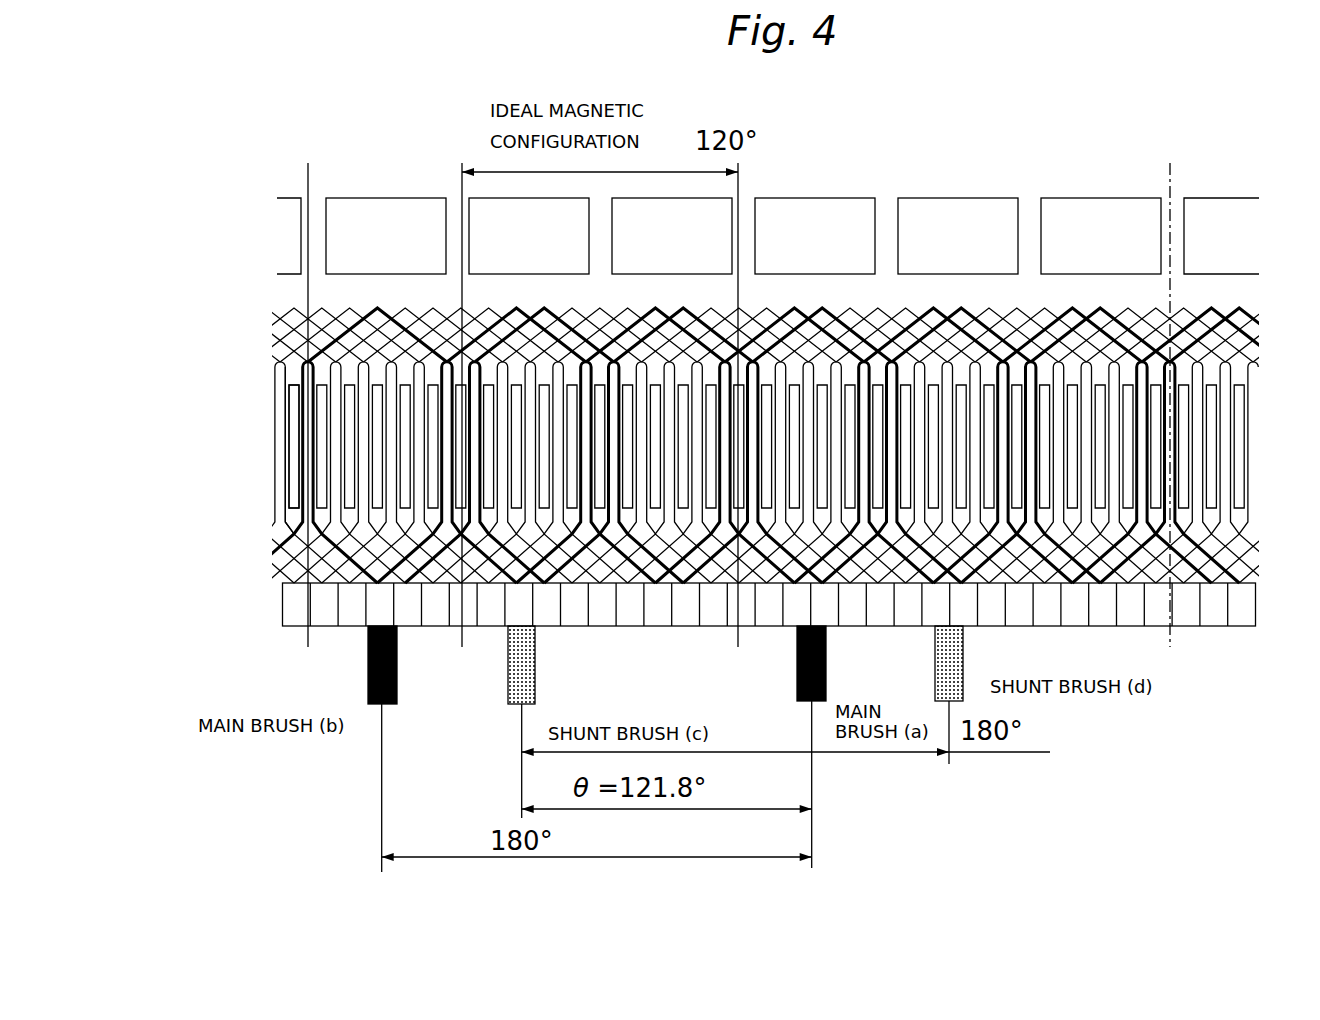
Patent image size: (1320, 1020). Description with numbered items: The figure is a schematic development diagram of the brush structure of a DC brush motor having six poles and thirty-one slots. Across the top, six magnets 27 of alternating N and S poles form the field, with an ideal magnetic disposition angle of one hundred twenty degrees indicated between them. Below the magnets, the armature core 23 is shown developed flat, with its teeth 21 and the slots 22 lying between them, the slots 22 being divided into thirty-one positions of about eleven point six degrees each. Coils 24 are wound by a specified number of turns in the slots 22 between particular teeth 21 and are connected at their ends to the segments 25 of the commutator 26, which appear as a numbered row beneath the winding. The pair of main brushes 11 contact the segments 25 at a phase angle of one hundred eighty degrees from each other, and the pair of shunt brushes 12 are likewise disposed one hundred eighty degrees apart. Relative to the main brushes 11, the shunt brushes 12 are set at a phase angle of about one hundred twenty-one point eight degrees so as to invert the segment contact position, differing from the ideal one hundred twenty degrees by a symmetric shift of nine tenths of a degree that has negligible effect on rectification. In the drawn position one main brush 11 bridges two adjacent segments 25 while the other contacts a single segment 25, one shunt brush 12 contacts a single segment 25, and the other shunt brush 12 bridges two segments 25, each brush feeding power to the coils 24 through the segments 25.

The magnet 27 is at (384, 197).
The coil 24 is at (296, 313).
The armature core 23 is at (284, 395).
The teeth 21 is at (290, 470).
The slot 22 is at (290, 493).
The commutator 26 is at (268, 588).
The segment 25 is at (282, 628).
The shunt brush 12 is at (508, 673).
The main brush 11 is at (797, 676).